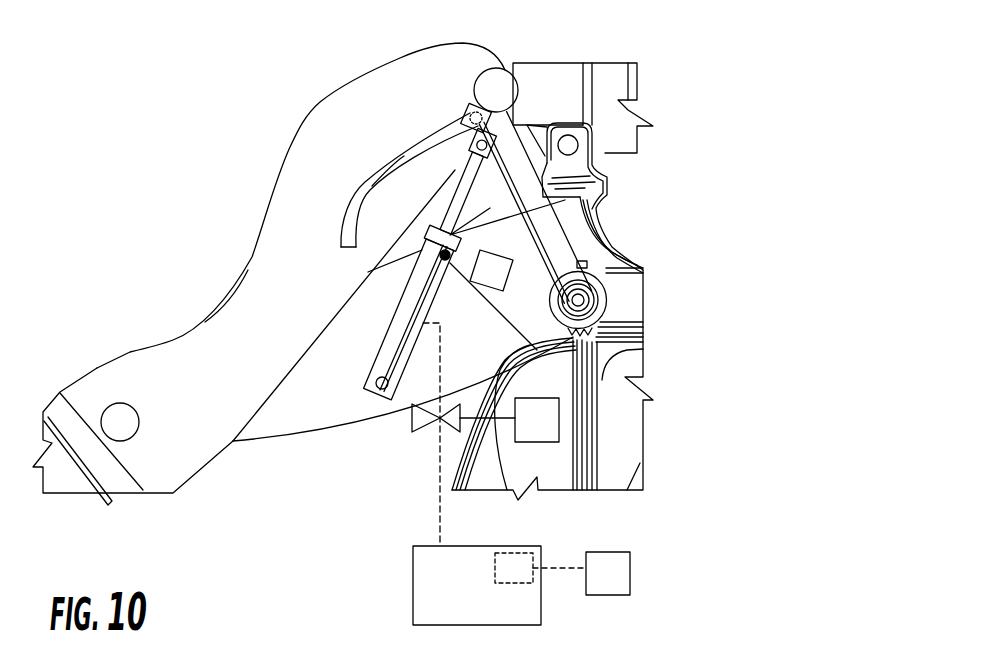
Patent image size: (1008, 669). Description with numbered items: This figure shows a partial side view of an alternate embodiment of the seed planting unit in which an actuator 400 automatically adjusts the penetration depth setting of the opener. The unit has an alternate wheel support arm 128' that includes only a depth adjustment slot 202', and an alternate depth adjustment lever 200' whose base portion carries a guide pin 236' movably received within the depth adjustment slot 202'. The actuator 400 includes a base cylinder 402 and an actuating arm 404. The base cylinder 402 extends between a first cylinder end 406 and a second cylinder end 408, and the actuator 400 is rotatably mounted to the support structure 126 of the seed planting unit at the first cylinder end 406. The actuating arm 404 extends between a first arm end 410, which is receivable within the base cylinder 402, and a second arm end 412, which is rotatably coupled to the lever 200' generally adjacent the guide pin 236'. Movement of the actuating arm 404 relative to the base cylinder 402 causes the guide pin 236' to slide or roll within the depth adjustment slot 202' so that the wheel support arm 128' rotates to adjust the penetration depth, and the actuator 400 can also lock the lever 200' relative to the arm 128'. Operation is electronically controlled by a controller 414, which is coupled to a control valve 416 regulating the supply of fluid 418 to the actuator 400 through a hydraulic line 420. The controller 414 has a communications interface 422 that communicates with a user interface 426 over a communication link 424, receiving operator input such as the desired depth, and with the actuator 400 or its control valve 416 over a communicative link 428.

The wheel support arm 128' is at (269, 274).
The support structure 126 is at (267, 420).
The depth adjustment slot 202' is at (390, 180).
The guide pin 236' is at (504, 70).
The second arm end 412 is at (517, 62).
The actuator 400 is at (415, 279).
The base cylinder 402 is at (440, 287).
The actuating arm 404 is at (463, 187).
The second cylinder end 408 is at (433, 246).
The first cylinder end 406 is at (366, 407).
The first arm end 410 is at (420, 303).
The depth adjustment lever 200' is at (559, 281).
The control valve 416 is at (417, 435).
The hydraulic line 420 is at (441, 359).
The supply of fluid 418 is at (538, 426).
The communicative link 428 is at (438, 522).
The controller 414 is at (493, 587).
The communications interface 422 is at (512, 563).
The communication link 424 is at (563, 572).
The user interface 426 is at (608, 572).